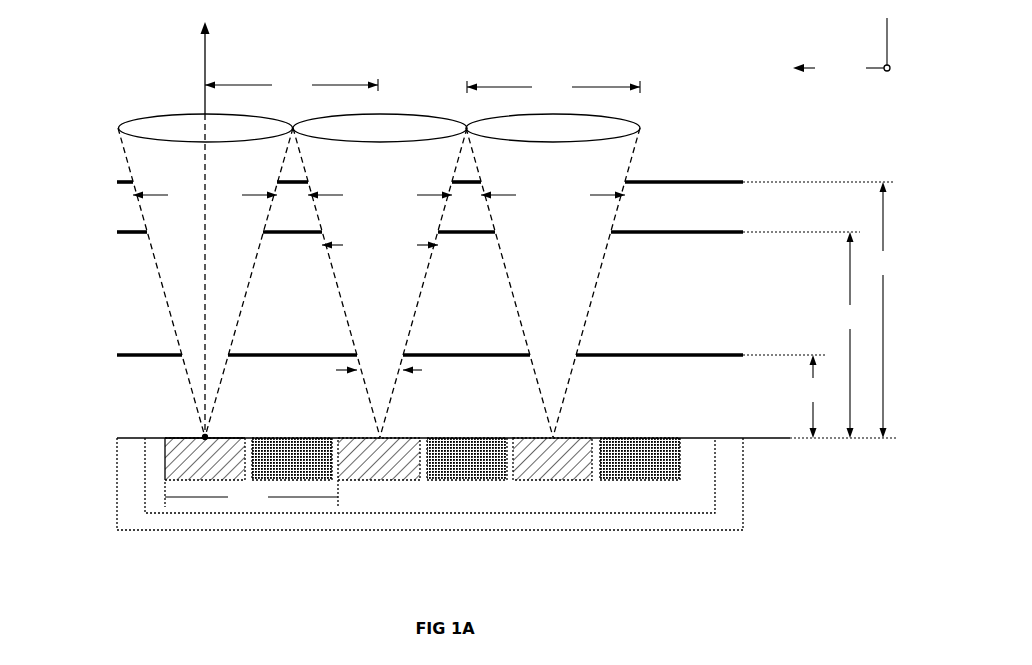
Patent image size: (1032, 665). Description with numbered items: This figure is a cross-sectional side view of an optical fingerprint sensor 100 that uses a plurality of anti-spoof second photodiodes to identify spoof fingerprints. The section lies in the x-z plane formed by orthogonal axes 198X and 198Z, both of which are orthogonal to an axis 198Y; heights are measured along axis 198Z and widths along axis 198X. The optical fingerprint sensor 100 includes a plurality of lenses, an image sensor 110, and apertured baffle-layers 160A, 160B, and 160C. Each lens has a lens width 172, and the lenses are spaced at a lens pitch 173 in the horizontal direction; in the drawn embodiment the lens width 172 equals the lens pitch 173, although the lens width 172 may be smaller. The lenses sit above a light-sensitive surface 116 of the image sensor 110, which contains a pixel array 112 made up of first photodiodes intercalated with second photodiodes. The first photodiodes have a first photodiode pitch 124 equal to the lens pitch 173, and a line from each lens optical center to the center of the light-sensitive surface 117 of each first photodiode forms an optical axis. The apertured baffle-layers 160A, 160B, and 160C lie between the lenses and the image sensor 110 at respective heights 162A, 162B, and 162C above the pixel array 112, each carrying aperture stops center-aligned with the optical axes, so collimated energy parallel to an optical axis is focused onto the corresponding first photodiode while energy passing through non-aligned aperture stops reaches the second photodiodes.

The optical fingerprint sensor 100 is at (116, 44).
The image sensor 110 is at (735, 512).
The pixel array 112 is at (700, 505).
The light-sensitive surface 116 is at (126, 428).
The light-sensitive surface of first photodiode 117 is at (174, 424).
The first photodiode pitch 124 is at (251, 472).
The apertured baffle-layer 160A is at (680, 182).
The apertured baffle-layer 160B is at (675, 232).
The apertured baffle-layer 160C is at (672, 355).
The height 162A is at (883, 310).
The height 162B is at (850, 335).
The height 162C is at (813, 396).
The lens width 172 is at (553, 87).
The lens pitch 173 is at (291, 85).
The axis 198X is at (838, 68).
The axis 198Y is at (884, 64).
The axis 198Z is at (887, 32).